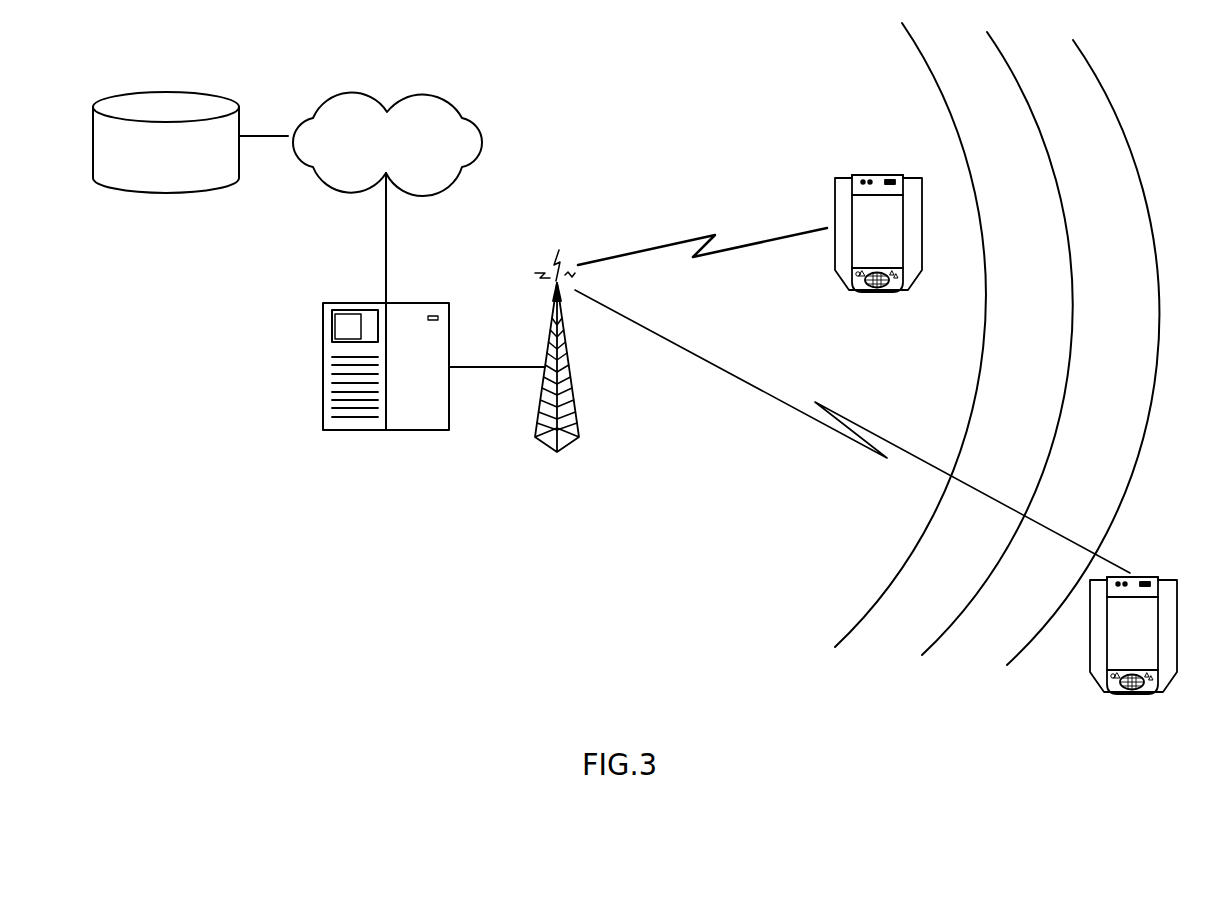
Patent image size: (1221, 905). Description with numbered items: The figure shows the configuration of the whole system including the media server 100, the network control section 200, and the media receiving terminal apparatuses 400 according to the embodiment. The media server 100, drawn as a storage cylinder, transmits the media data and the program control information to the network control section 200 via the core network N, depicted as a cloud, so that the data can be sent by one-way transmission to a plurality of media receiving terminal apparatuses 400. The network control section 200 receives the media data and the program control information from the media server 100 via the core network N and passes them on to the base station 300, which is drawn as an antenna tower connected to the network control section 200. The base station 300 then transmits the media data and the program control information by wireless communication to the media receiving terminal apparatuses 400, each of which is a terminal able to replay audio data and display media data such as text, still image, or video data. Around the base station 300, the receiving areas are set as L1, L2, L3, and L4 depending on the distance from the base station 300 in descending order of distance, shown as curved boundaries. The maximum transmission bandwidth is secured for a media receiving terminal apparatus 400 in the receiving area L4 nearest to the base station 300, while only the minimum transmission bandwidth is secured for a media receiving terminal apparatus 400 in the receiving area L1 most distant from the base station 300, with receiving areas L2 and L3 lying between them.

The media server 100 is at (188, 92).
The core network N is at (462, 118).
The network control section 200 is at (412, 303).
The base station 300 is at (577, 413).
The media receiving terminal apparatus 400 is at (870, 173).
The receiving area L1 is at (1143, 98).
The receiving area L2 is at (1083, 352).
The receiving area L3 is at (997, 343).
The receiving area L4 is at (910, 335).